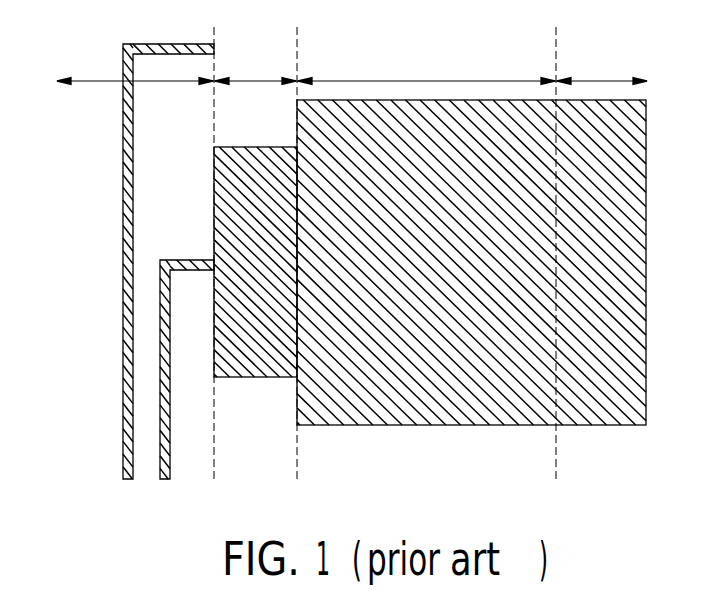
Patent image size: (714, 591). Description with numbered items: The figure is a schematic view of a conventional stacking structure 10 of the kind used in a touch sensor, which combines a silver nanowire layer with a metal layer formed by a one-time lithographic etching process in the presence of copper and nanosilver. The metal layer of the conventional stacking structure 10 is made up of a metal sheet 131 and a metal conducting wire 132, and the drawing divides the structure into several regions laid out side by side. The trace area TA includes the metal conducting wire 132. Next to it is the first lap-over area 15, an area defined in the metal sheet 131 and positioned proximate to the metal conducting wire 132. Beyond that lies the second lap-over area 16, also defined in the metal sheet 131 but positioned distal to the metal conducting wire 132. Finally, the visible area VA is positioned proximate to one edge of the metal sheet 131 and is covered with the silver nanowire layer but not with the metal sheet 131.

The conventional stacking structure 10 is at (50, 32).
The first lap-over area 15 is at (255, 253).
The second lap-over area 16 is at (471, 253).
The metal sheet 131 is at (258, 372).
The metal conducting wire 132 is at (162, 405).
The trace area TA is at (135, 260).
The visible area VA is at (601, 233).